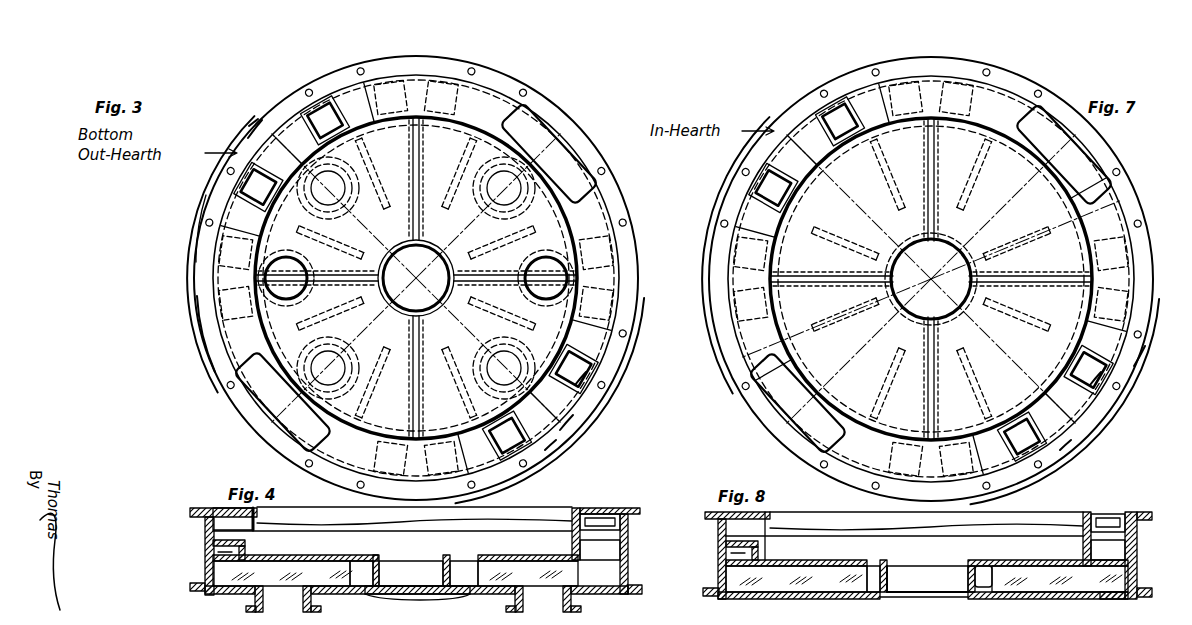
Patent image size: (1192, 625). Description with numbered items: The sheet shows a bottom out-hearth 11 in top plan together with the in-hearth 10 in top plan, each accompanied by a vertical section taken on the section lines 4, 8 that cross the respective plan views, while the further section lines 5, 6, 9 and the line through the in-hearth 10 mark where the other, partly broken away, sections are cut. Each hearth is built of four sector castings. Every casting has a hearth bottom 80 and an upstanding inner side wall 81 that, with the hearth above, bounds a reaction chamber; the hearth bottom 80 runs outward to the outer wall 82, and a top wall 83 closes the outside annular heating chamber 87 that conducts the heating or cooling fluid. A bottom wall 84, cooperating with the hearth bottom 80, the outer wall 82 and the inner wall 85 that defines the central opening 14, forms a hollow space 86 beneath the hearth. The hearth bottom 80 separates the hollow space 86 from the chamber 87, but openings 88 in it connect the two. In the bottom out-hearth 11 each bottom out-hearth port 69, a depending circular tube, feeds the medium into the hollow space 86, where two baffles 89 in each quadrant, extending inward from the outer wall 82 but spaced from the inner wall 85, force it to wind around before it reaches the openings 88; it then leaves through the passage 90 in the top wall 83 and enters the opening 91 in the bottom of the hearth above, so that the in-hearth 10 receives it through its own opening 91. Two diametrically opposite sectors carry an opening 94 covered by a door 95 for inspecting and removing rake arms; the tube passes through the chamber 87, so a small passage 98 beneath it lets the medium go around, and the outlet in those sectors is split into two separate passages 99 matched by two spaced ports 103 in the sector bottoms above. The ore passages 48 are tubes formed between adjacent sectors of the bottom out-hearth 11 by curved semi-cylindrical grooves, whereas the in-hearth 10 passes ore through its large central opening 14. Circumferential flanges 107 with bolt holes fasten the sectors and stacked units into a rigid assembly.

In FIG. 3, the section line 4— 4 is at (263, 117).
In FIG. 3, the section line 5— 5 is at (378, 70).
In FIG. 3, the section line 6— 6 is at (637, 182).
In FIG. 7, the section line 8— 8 is at (777, 114).
In FIG. 7, the section line 9— 9 is at (1176, 250).
In FIG. 7, the in-hearth 10 is at (1148, 178).
In FIG. 3, the bottom out-hearth 11 is at (205, 180).
In FIG. 3, the central opening 14 is at (416, 278).
In FIG. 7, the central opening 14 is at (931, 279).
In FIG. 4, the central opening 14 is at (411, 573).
In FIG. 8, the central opening 14 is at (927, 579).
In FIG. 3, the ore passage 48 is at (416, 278).
In FIG. 3, the bottom out-hearth port 69 is at (498, 350).
In FIG. 4, the bottom out-hearth port 69 is at (302, 606).
In FIG. 3, the hearth bottom 80 is at (405, 300).
In FIG. 7, the hearth bottom 80 is at (898, 328).
In FIG. 4, the hearth bottom 80 is at (310, 558).
In FIG. 8, the hearth bottom 80 is at (857, 548).
In FIG. 3, the inner side wall 81 is at (462, 128).
In FIG. 7, the inner side wall 81 is at (790, 370).
In FIG. 4, the inner side wall 81 is at (572, 521).
In FIG. 8, the inner side wall 81 is at (1083, 548).
In FIG. 4, the outer wall 82 is at (628, 550).
In FIG. 8, the outer wall 82 is at (1137, 572).
In FIG. 4, the top wall 83 is at (216, 510).
In FIG. 4, the bottom wall 84 is at (492, 590).
In FIG. 8, the bottom wall 84 is at (818, 598).
In FIG. 7, the inner wall 85 is at (893, 262).
In FIG. 4, the inner wall 85 is at (428, 594).
In FIG. 8, the inner wall 85 is at (968, 581).
In FIG. 4, the hollow space 86 is at (372, 556).
In FIG. 8, the hollow space 86 is at (880, 564).
In FIG. 4, the outside annular heating chamber 87 is at (600, 550).
In FIG. 8, the outside annular heating chamber 87 is at (1108, 550).
In FIG. 3, the openings 88 is at (225, 303).
In FIG. 7, the openings 88 is at (745, 246).
In FIG. 3, the baffles 89 is at (452, 362).
In FIG. 7, the baffles 89 is at (1046, 298).
In FIG. 4, the baffles 89 is at (395, 573).
In FIG. 8, the baffles 89 is at (927, 579).
In FIG. 3, the passage 90 is at (416, 278).
In FIG. 7, the passage 90 is at (931, 279).
In FIG. 4, the passage 90 is at (598, 512).
In FIG. 8, the passage 90 is at (1104, 512).
In FIG. 7, the opening 91 is at (1084, 188).
In FIG. 8, the opening 91 is at (1120, 600).
In FIG. 4, the opening 94 is at (212, 533).
In FIG. 8, the opening 94 is at (724, 537).
In FIG. 3, the door 95 is at (262, 136).
In FIG. 4, the small passage 98 is at (213, 553).
In FIG. 8, the small passage 98 is at (726, 556).
In FIG. 3, the passages 99 is at (416, 278).
In FIG. 7, the passages 99 is at (931, 279).
In FIG. 3, the spaced ports 103 is at (580, 392).
In FIG. 7, the spaced ports 103 is at (1100, 392).
In FIG. 3, the circumferential flanges 107 is at (215, 355).
In FIG. 7, the circumferential flanges 107 is at (1124, 382).
In FIG. 4, the circumferential flanges 107 is at (192, 510).